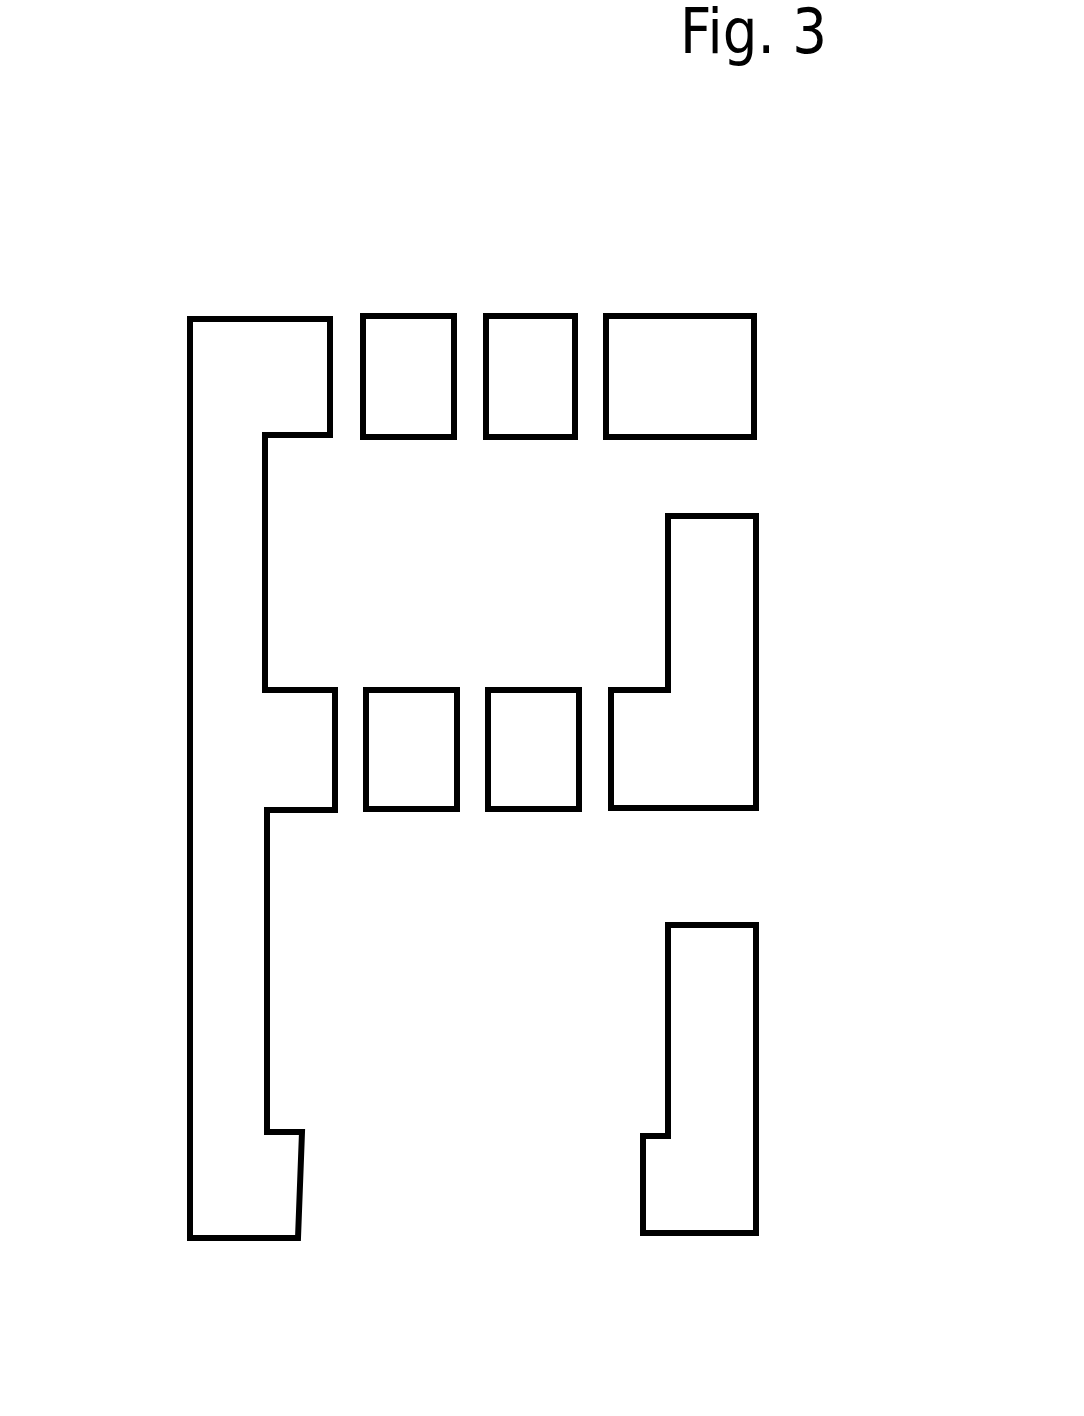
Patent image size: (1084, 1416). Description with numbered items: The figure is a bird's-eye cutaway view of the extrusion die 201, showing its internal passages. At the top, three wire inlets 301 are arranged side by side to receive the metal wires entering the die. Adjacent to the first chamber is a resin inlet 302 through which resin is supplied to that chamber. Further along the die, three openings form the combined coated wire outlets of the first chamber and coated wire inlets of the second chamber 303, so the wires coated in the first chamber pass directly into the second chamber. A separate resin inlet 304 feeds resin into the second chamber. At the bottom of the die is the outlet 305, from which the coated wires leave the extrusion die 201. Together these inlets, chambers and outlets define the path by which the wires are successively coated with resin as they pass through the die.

The extrusion die 201 is at (208, 732).
The wire inlets 301 is at (347, 303).
The resin inlet to the first chamber 302 is at (714, 469).
The combined coated wire outlets of the first chamber and coated wire inlets of the 303 is at (590, 743).
The resin inlet to the second chamber 304 is at (708, 860).
The outlet of the die 305 is at (460, 1213).